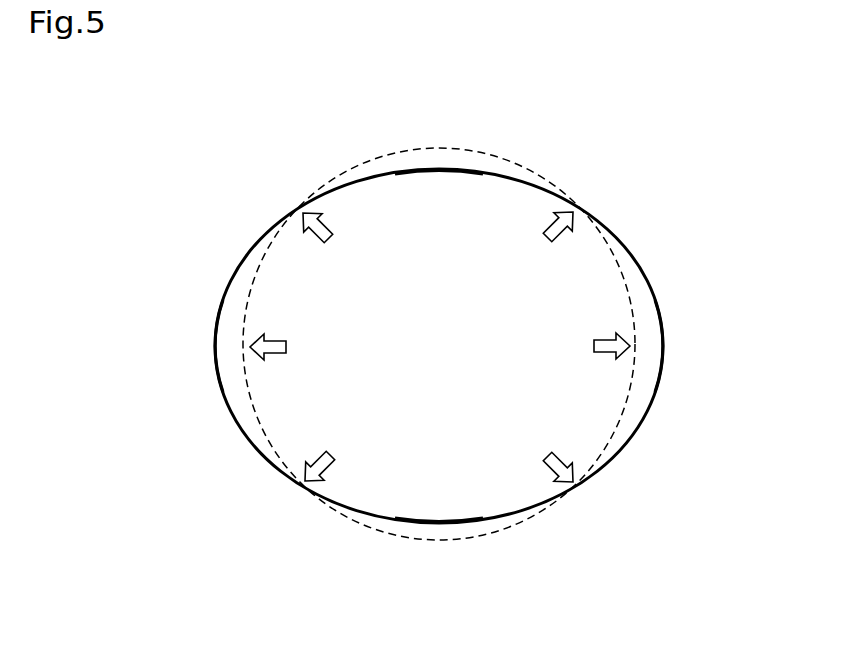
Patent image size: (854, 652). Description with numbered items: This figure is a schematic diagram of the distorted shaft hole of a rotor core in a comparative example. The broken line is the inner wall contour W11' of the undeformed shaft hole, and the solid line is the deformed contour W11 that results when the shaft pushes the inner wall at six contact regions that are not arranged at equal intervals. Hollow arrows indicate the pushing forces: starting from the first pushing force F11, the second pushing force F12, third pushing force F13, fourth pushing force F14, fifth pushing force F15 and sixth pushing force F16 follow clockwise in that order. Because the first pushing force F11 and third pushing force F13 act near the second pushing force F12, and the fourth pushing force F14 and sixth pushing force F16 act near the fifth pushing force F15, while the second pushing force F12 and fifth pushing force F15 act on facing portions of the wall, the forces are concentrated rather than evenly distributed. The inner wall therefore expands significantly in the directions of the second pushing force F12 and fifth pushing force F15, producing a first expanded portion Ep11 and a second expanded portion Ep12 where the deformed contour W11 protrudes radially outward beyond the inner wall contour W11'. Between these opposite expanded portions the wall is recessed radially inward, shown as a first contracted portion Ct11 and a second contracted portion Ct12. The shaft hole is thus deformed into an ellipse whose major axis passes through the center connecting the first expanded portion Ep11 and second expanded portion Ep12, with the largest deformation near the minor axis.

The inner wall contour W11' is at (439, 309).
The deformed contour W11 is at (439, 316).
The second contracted portion Ct12 is at (437, 172).
The first contracted portion Ct11 is at (437, 521).
The first expanded portion Ep11 is at (664, 345).
The second expanded portion Ep12 is at (216, 347).
The first pushing force F11 is at (548, 238).
The second pushing force F12 is at (592, 346).
The third pushing force F13 is at (556, 455).
The fourth pushing force F14 is at (322, 455).
The fifth pushing force F15 is at (287, 347).
The sixth pushing force F16 is at (326, 238).